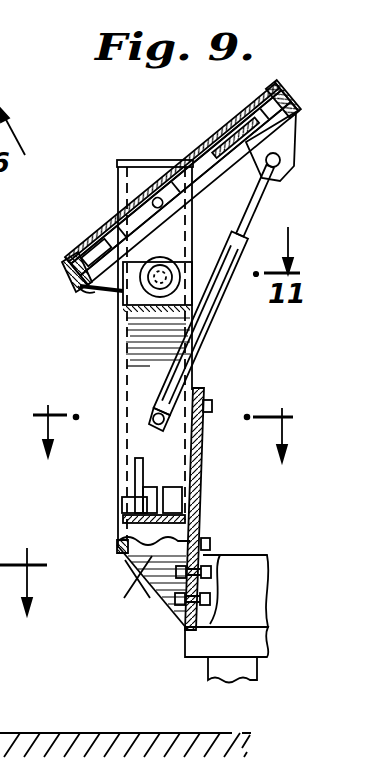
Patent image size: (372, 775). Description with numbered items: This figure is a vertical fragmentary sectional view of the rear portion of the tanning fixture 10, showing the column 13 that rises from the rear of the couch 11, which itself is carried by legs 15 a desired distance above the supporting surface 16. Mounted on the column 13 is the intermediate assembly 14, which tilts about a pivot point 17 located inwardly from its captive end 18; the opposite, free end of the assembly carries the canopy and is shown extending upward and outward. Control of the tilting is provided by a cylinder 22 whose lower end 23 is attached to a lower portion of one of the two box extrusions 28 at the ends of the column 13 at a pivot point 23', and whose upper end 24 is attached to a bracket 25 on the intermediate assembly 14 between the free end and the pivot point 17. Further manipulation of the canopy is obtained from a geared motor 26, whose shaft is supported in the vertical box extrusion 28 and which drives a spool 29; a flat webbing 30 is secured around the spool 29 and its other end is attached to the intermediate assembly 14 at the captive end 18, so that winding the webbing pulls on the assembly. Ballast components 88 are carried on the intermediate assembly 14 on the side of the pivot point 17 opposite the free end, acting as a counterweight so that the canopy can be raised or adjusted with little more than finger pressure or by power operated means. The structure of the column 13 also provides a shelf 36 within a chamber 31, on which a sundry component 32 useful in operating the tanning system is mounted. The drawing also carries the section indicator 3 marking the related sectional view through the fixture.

The intermediate assembly 14 is at (253, 100).
The bracket 25 is at (277, 86).
The box extrusion 28 is at (174, 160).
The pivot point 17 is at (155, 192).
The ballast components 88 is at (90, 246).
The captive end 18 is at (63, 260).
The flat webbing 30 is at (90, 292).
The chamber 31 is at (140, 350).
The column 13 is at (118, 385).
The spool 29 is at (160, 258).
The upper end 24 is at (250, 218).
The geared motor 26 is at (190, 290).
The cylinder 22 is at (195, 350).
The lower end 23 is at (215, 509).
The pivot point 23' is at (115, 439).
The component 32 is at (147, 505).
The shelf 36 is at (130, 548).
The couch 11 is at (252, 572).
The legs 15 is at (222, 684).
The supporting surface 16 is at (33, 733).
The fixture 10 is at (164, 450).
The section line 3 is at (23, 602).